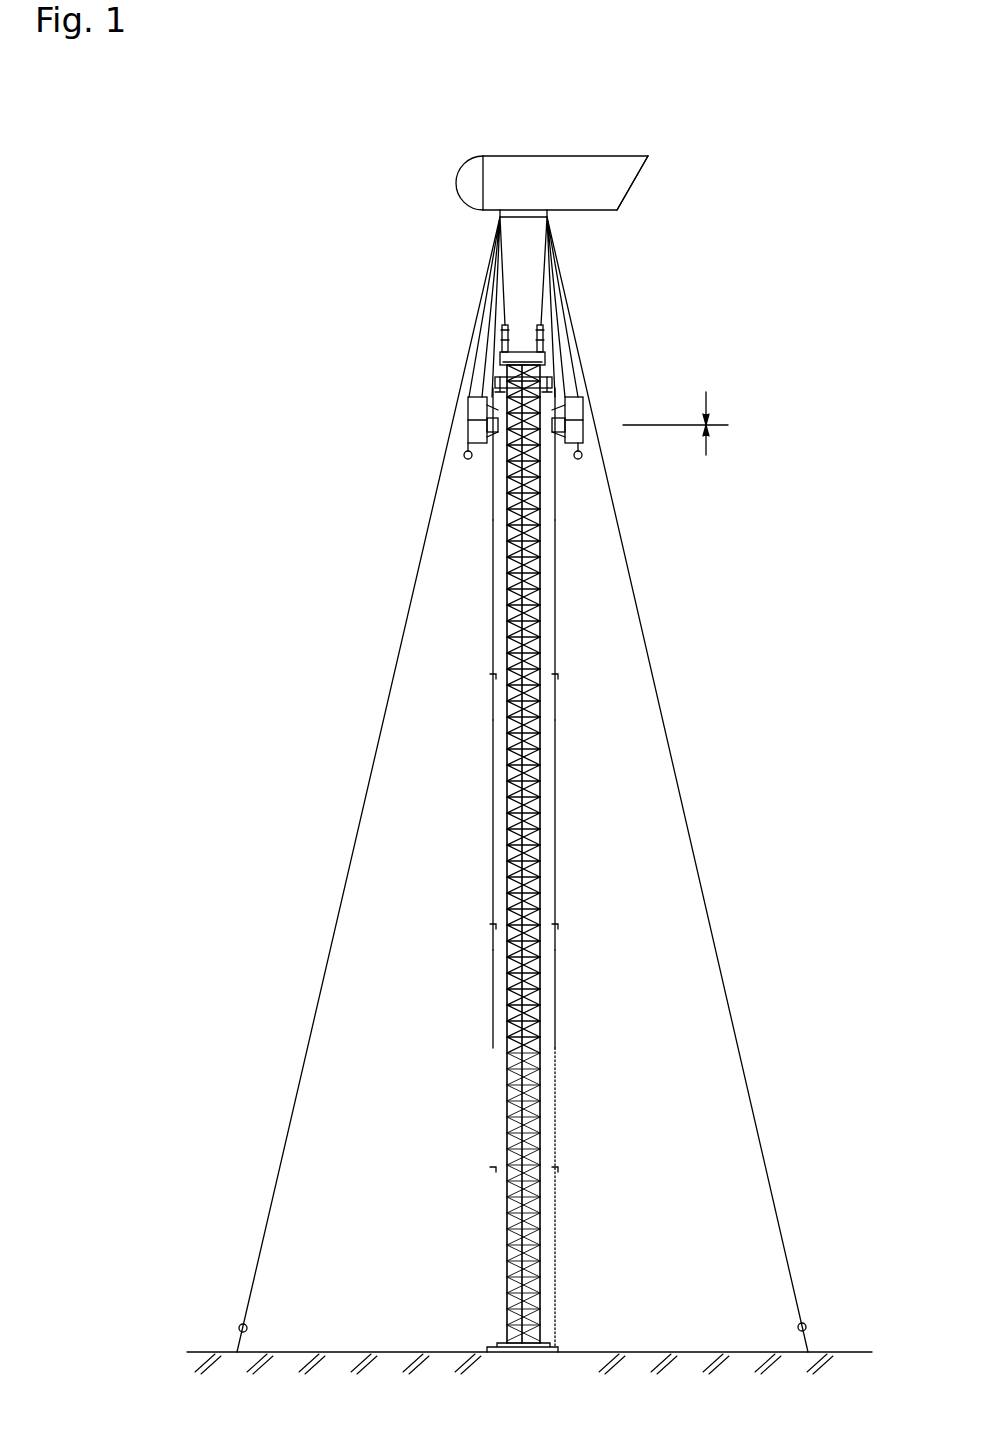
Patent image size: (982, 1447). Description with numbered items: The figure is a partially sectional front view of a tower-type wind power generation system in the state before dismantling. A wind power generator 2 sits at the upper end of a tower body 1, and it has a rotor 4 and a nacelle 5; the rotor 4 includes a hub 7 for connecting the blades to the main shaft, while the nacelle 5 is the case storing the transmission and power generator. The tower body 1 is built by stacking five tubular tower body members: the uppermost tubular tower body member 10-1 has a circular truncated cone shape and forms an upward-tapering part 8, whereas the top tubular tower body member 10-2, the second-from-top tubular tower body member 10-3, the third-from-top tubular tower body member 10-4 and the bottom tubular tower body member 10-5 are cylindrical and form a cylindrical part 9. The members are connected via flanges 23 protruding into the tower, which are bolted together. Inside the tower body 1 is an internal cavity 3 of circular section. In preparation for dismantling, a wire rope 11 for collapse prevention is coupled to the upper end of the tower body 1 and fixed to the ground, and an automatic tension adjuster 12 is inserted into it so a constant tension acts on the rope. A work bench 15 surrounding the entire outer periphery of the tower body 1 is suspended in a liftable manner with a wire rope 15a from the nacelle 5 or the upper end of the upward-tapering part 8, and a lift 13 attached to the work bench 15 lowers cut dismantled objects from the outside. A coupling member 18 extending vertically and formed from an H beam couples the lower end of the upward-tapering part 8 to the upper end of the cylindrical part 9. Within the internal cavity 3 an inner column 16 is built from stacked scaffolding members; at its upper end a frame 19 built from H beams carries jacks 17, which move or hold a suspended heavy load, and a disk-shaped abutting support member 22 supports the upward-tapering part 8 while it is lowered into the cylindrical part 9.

The tower body 1 is at (452, 650).
The wind power generator 2 is at (559, 137).
The internal cavity 3 is at (548, 1293).
The rotor 4 is at (438, 133).
The nacelle 5 is at (637, 155).
The hub 7 is at (457, 181).
The upward-tapering part 8 is at (675, 392).
The cylindrical part 9 is at (705, 458).
The uppermost tubular tower body member 10-1 is at (548, 322).
The top tubular tower body member 10-2 is at (555, 550).
The second-from-top tubular tower body member 10-3 is at (555, 785).
The third-from-top tubular tower body member 10-4 is at (555, 1005).
The bottom tubular tower body member 10-5 is at (555, 1210).
The wire rope for collapse prevention 11 is at (271, 1215).
The automatic tension adjuster 12 is at (240, 1328).
The lift 13 is at (468, 459).
The work bench 15 is at (457, 446).
The wire rope 15a is at (470, 356).
The inner column 16 is at (504, 590).
The jack 17 is at (503, 326).
The coupling member 18 is at (468, 405).
The frame 19 is at (517, 350).
The abutting support member 22 is at (548, 378).
The flange 23 is at (486, 428).